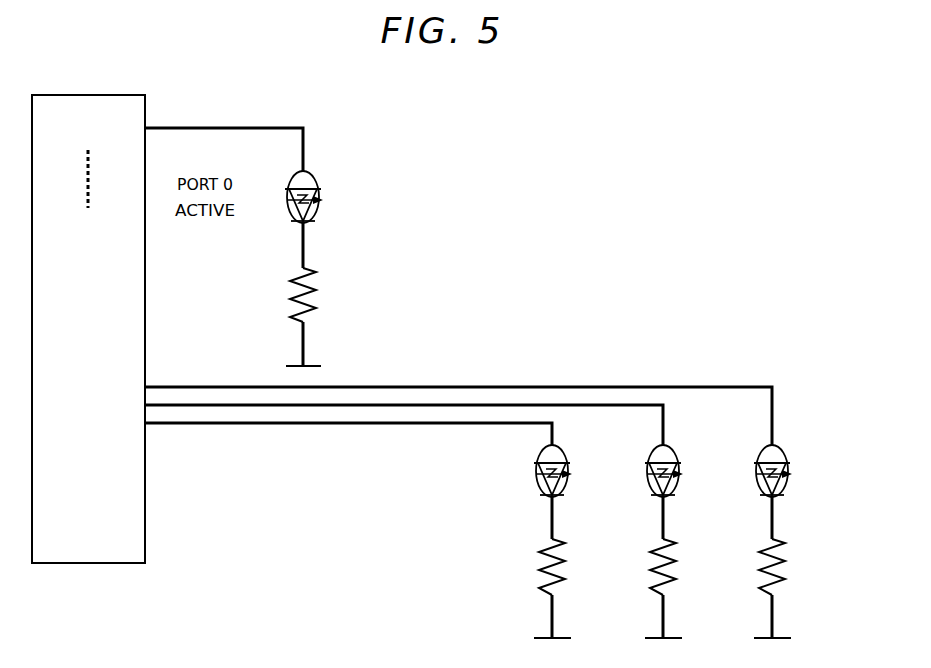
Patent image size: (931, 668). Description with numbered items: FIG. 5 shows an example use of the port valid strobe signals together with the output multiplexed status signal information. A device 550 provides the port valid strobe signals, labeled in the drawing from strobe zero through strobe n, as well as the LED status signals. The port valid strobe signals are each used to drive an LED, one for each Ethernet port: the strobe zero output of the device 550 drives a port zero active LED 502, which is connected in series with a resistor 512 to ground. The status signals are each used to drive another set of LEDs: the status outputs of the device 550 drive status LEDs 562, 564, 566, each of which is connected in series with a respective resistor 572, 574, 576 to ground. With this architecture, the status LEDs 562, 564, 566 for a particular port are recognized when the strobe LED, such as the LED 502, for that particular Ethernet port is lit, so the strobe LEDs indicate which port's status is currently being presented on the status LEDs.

The port 0 active LED 502 is at (328, 186).
The resistor 512 is at (318, 299).
The controller / port circuit 550 is at (90, 565).
The status LED 562 is at (578, 459).
The status LED 564 is at (689, 459).
The status LED 566 is at (798, 459).
The resistor 572 is at (568, 572).
The resistor 574 is at (679, 572).
The resistor 576 is at (788, 572).